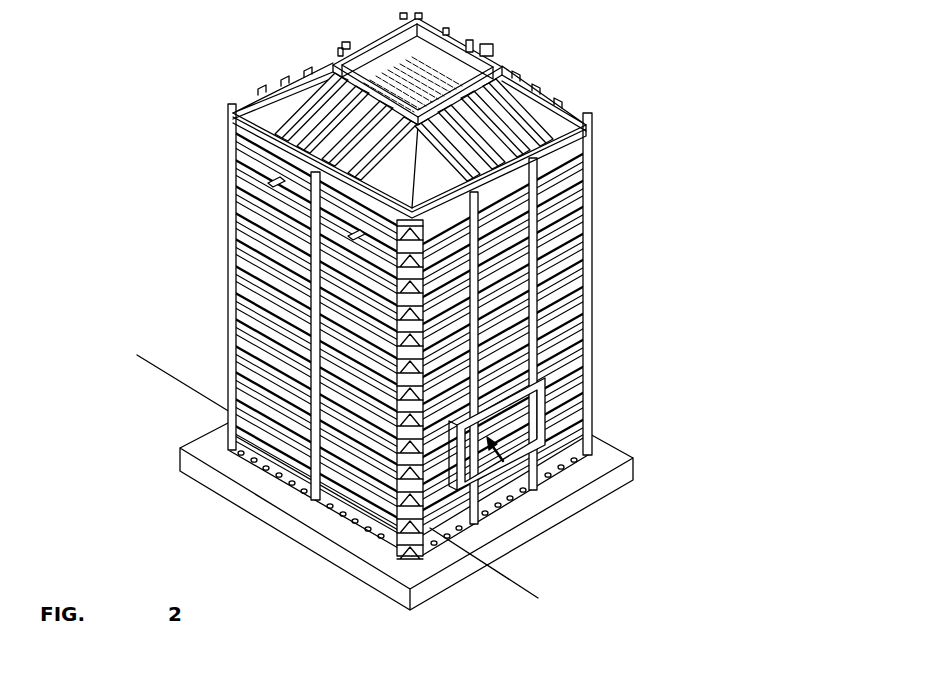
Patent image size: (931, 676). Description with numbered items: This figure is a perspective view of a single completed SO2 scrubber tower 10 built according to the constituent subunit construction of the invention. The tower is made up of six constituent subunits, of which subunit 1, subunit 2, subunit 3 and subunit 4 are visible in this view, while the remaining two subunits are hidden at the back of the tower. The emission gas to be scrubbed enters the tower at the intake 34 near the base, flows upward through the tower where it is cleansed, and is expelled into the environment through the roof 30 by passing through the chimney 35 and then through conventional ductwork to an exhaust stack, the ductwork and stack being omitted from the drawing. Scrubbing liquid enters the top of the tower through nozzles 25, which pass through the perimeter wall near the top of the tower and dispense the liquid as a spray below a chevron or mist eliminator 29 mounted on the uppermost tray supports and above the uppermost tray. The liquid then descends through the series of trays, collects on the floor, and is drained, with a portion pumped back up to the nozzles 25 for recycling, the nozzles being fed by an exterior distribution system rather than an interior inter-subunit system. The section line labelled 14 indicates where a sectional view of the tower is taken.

The scrubber tower 10 is at (415, 301).
The subunit 1 is at (226, 250).
The subunit 2 is at (362, 503).
The subunit 3 is at (528, 470).
The subunit 4 is at (595, 437).
The section line 14- 14 is at (147, 345).
The nozzles 25 is at (266, 181).
The mist eliminator 29 is at (392, 77).
The roof 30 is at (509, 56).
The intake 34 is at (497, 452).
The chimney 35 is at (428, 56).